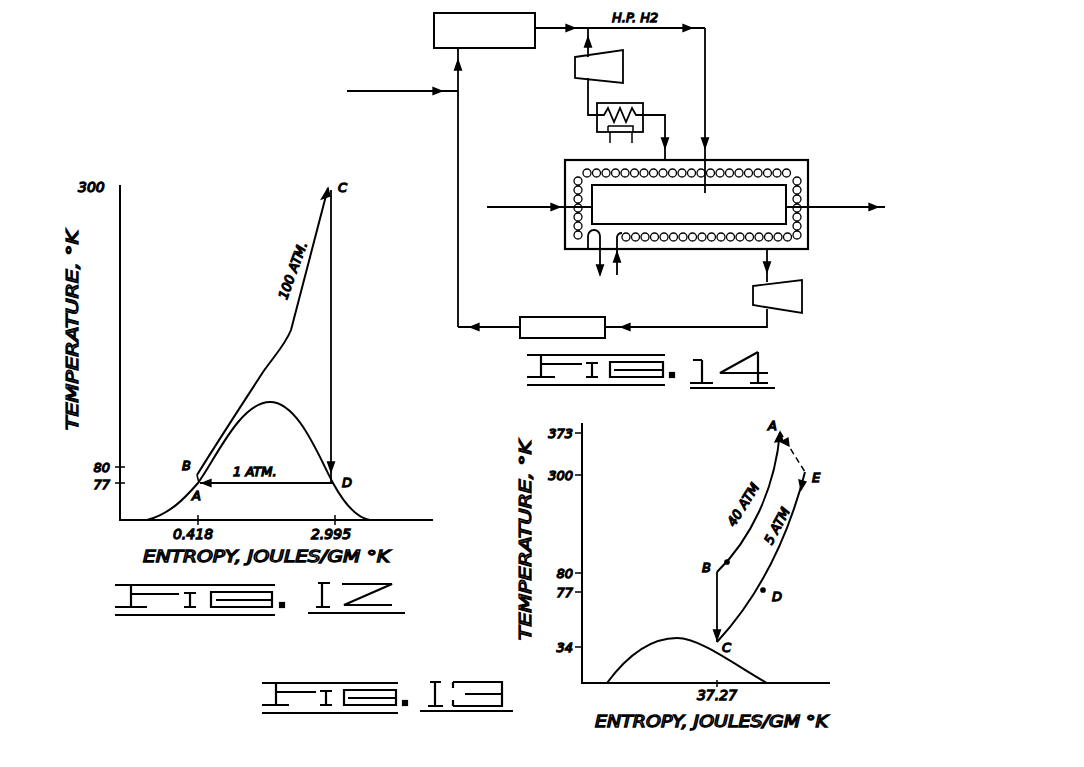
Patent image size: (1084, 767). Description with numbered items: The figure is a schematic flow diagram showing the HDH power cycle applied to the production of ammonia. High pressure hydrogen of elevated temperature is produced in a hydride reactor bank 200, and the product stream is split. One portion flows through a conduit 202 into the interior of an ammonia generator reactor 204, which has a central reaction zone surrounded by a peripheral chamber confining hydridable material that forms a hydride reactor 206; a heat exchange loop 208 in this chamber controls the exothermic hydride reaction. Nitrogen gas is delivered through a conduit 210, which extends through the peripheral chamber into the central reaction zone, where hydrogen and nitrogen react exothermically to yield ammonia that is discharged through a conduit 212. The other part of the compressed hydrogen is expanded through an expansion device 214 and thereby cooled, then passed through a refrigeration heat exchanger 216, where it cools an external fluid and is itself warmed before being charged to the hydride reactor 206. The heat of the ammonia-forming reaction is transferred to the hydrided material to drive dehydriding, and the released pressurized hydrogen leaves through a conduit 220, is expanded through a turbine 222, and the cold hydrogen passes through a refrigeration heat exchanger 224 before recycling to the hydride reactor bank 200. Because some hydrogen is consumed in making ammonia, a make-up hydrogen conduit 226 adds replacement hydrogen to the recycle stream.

The hydride reactor bank 200 is at (480, 52).
The conduit 202 is at (705, 78).
The ammonia generator reactor 204 is at (817, 150).
The hydride reactor 206 is at (753, 166).
The heat exchange loop 208 is at (644, 250).
The conduit 210 is at (500, 208).
The conduit 212 is at (820, 208).
The expansion device 214 is at (623, 52).
The refrigeration heat exchanger 216 is at (625, 103).
The conduit 220 is at (760, 266).
The turbine 222 is at (803, 297).
The refrigeration heat exchanger 224 is at (606, 320).
The make-up hydrogen conduit 226 is at (458, 82).